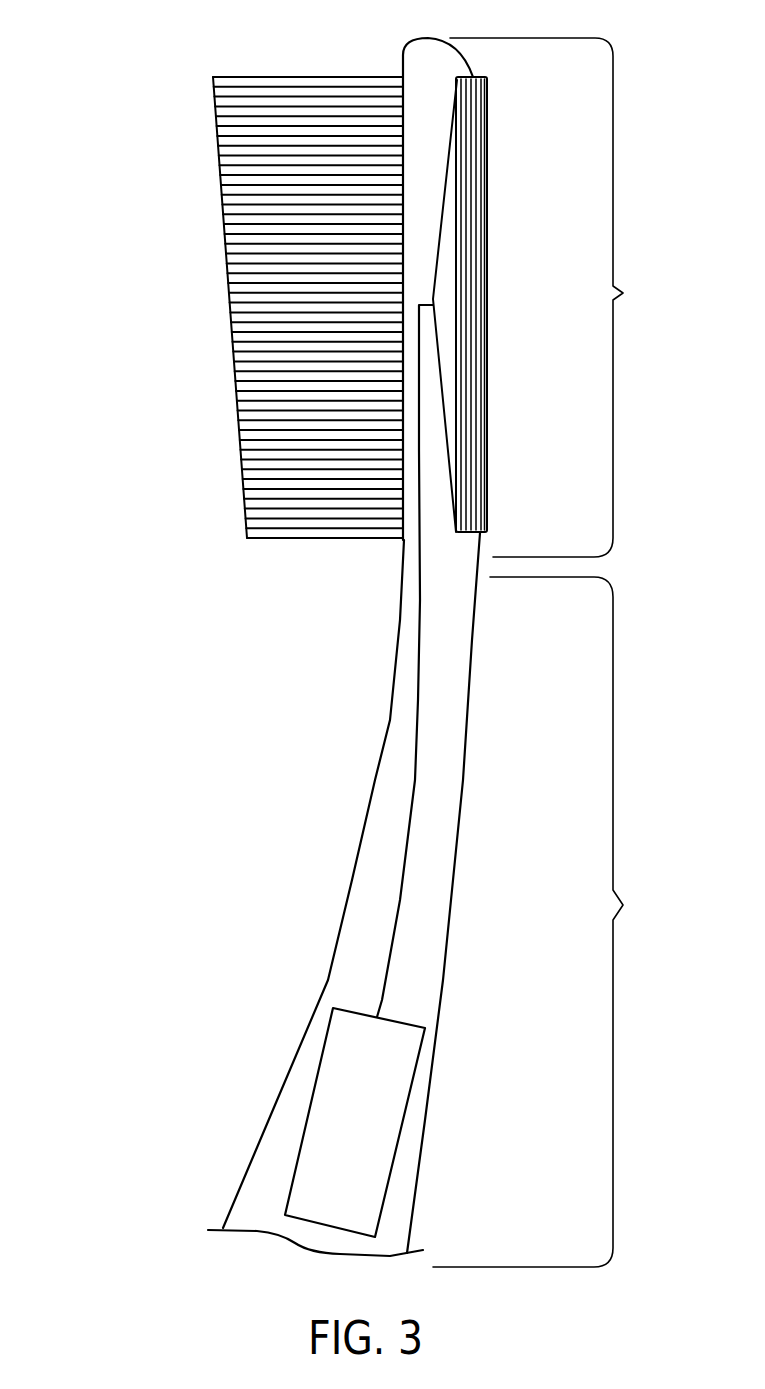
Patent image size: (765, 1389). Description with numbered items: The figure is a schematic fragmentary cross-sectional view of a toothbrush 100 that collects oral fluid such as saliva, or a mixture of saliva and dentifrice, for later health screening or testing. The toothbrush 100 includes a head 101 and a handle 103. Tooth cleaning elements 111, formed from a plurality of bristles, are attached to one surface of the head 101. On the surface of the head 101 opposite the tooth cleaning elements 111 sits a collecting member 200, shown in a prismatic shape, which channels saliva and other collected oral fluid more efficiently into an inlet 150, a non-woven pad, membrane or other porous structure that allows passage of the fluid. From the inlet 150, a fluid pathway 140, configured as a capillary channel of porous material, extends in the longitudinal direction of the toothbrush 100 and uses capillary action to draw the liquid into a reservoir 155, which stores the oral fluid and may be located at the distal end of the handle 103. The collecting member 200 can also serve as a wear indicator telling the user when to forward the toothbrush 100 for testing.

The toothbrush 100 is at (115, 261).
The head 101 is at (563, 297).
The handle 103 is at (552, 922).
The tooth cleaning elements 111 is at (266, 552).
The fluid pathway 140 is at (405, 717).
The inlet 150 is at (440, 139).
The reservoir 155 is at (376, 1133).
The collecting member 200 is at (505, 145).